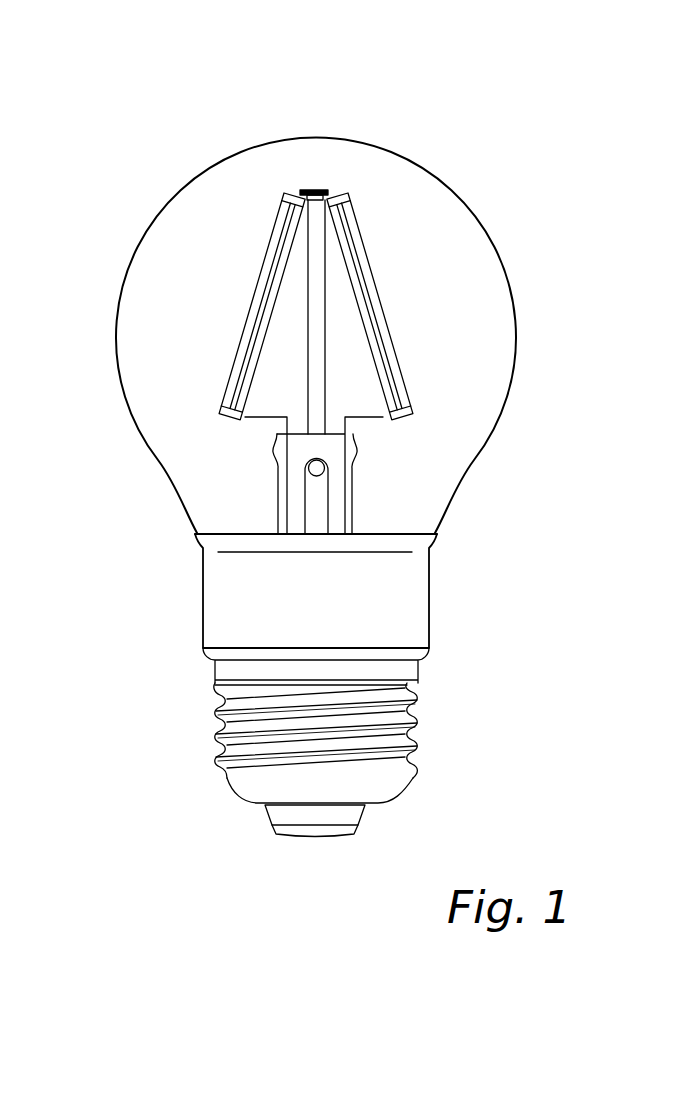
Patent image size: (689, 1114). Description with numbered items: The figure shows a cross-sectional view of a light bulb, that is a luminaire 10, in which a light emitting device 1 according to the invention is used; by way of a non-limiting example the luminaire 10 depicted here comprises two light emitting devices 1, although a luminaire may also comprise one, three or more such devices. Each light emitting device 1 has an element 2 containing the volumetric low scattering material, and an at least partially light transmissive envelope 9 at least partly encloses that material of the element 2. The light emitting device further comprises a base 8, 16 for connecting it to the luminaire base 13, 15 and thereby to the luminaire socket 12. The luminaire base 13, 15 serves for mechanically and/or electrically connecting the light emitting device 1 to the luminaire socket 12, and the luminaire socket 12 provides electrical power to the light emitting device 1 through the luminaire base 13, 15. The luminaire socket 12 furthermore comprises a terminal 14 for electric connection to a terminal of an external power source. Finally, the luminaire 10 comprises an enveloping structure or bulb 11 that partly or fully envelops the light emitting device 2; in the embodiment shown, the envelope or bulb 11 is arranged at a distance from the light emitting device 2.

The luminaire 10 is at (302, 92).
The light emitting device 1 is at (384, 201).
The element 2 is at (257, 302).
The base 8 is at (228, 423).
The light transmissive envelope 9 is at (227, 367).
The bulb 11 is at (197, 173).
The luminaire socket 12 is at (367, 732).
The luminaire base 13 is at (353, 497).
The terminal 14 is at (307, 838).
The luminaire base 15 is at (317, 307).
The base 16 is at (297, 193).